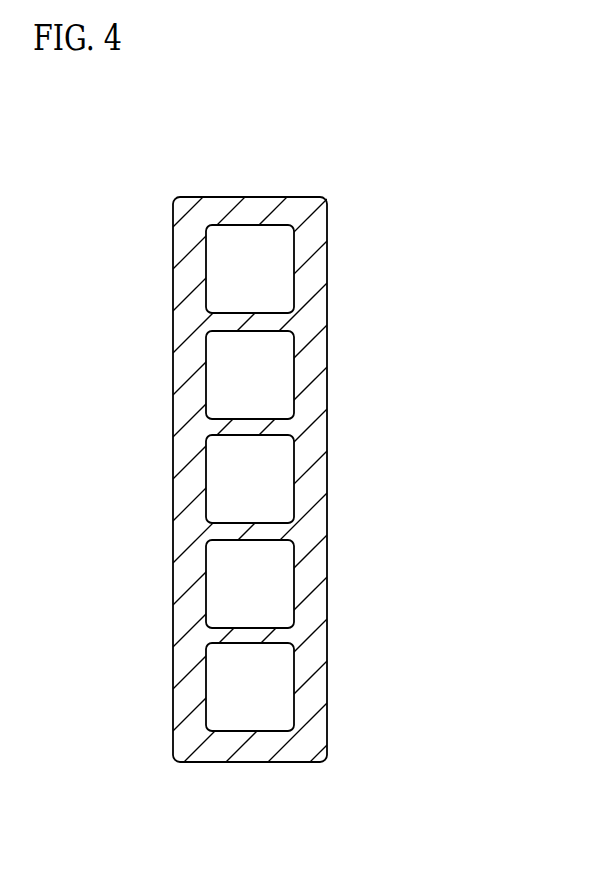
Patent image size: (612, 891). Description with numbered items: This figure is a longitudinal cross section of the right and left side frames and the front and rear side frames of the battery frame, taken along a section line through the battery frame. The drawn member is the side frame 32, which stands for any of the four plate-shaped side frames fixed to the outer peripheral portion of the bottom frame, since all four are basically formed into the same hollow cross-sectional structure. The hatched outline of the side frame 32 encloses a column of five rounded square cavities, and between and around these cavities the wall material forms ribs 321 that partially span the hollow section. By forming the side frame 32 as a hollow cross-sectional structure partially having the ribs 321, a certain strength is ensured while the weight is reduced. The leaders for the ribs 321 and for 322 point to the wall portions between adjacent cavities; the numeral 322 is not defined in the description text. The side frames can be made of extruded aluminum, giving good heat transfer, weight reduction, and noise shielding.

The side frame 32 is at (315, 236).
The rib 321 is at (267, 322).
The partition portion 322 is at (265, 532).